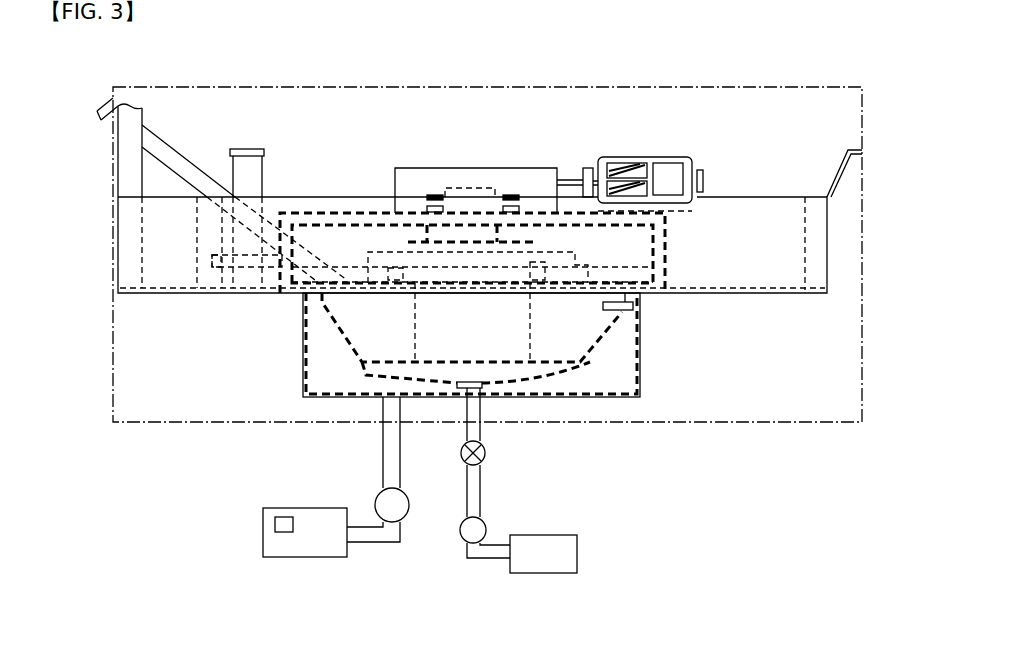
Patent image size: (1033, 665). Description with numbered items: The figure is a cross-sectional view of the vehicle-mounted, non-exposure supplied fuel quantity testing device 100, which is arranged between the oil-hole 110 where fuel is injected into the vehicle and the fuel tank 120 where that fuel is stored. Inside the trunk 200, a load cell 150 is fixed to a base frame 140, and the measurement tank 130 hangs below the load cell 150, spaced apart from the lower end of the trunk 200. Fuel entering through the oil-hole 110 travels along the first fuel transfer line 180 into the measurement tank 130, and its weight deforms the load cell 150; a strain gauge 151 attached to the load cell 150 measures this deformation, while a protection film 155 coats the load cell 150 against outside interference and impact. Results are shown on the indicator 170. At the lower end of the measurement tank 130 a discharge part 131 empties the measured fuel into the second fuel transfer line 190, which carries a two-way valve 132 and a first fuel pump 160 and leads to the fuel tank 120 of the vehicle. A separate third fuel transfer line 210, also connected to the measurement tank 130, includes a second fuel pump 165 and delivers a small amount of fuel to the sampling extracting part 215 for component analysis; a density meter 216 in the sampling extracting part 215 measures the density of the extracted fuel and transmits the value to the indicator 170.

The supplied fuel quantity testing device 100 is at (693, 117).
The oil-hole 110 is at (108, 104).
The fuel tank 120 is at (563, 573).
The measurement tank 130 is at (590, 340).
The discharge part 131 is at (480, 386).
The two-way valve 132 is at (486, 452).
The base frame 140 is at (298, 213).
The load cell 150 is at (512, 197).
The strain gauge 151 is at (433, 197).
The protection film 155 is at (403, 168).
The first fuel pump 160 is at (463, 536).
The second fuel pump 165 is at (392, 506).
The indicator 170 is at (638, 158).
The first fuel transfer line 180 is at (165, 143).
The second fuel transfer line 190 is at (487, 553).
The trunk 200 is at (714, 423).
The third fuel transfer line 210 is at (379, 540).
The sampling extracting part 215 is at (263, 544).
The density meter 216 is at (285, 517).